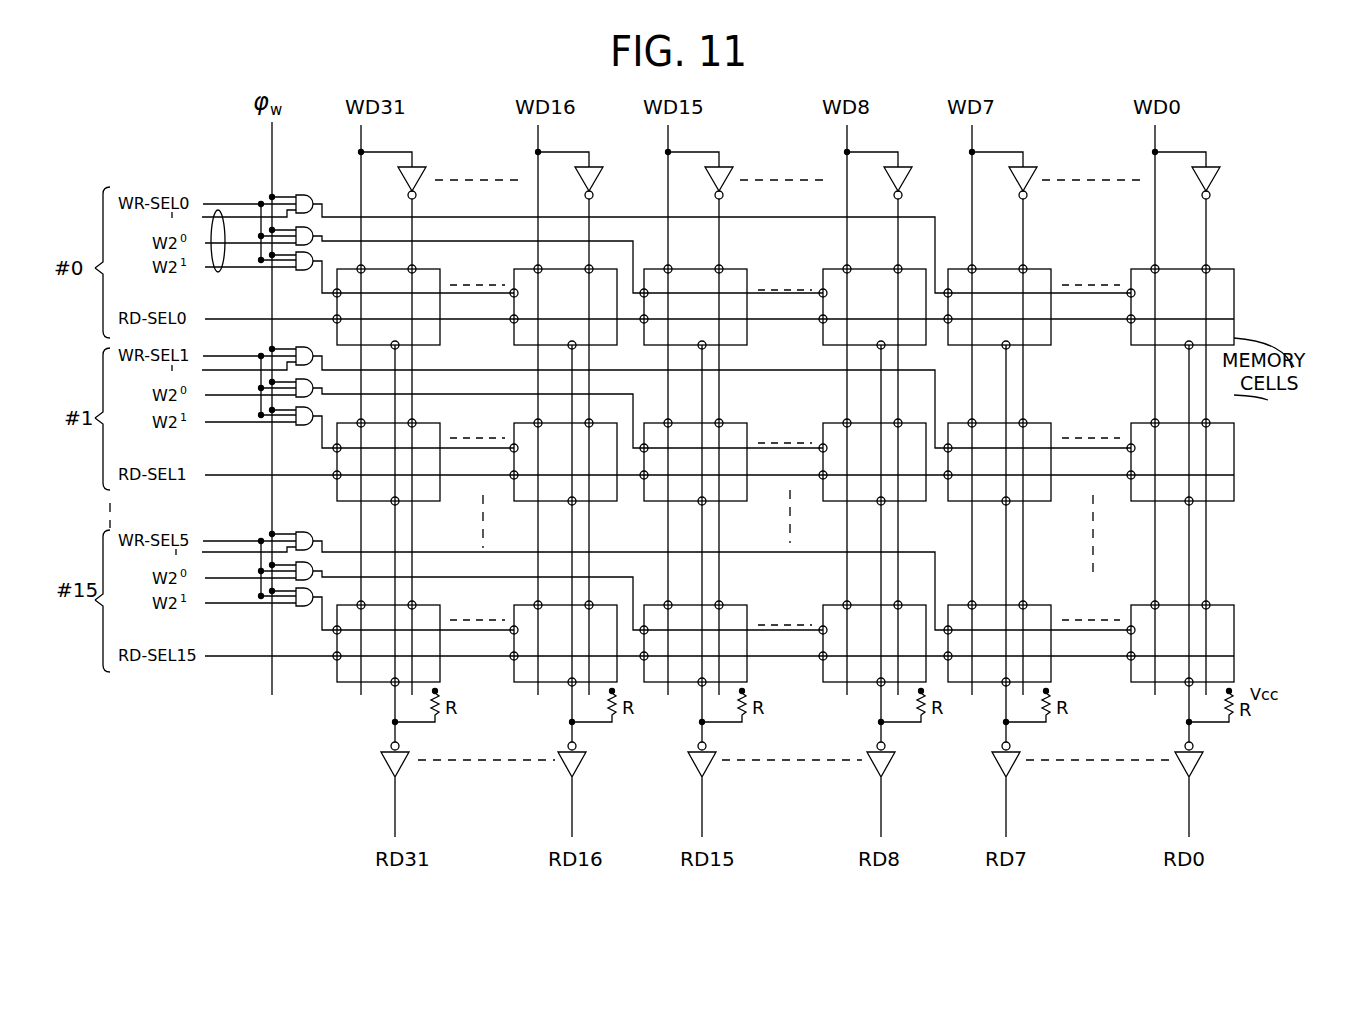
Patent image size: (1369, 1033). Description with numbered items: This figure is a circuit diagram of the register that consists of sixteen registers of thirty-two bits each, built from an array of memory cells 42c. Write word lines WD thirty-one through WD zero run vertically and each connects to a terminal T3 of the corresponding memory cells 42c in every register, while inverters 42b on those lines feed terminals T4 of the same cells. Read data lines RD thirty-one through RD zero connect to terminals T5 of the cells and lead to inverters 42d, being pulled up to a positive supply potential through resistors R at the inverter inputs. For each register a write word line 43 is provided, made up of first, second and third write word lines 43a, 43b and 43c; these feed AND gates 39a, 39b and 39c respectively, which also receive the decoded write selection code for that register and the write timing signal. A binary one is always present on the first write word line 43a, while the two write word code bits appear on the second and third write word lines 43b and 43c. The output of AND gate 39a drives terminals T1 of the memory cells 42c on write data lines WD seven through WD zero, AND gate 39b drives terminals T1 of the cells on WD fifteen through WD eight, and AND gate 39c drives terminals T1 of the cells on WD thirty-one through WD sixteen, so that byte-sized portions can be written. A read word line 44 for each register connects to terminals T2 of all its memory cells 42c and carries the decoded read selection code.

The AND gate 39a is at (310, 196).
The AND gate 39b is at (314, 236).
The AND gate 39c is at (314, 262).
The inverters 42b is at (422, 176).
The memory cells 42c is at (1240, 300).
The inverters 42d is at (405, 768).
The write word line 43 is at (214, 271).
The first write word line 43a is at (262, 235).
The second write word line 43b is at (262, 259).
The third write word line 43c is at (246, 272).
The read word line 44 is at (248, 322).
The terminal T1 is at (1124, 290).
The terminal T2 is at (1128, 324).
The terminal T3 is at (1158, 262).
The terminal T4 is at (1210, 263).
The terminal T5 is at (1186, 339).